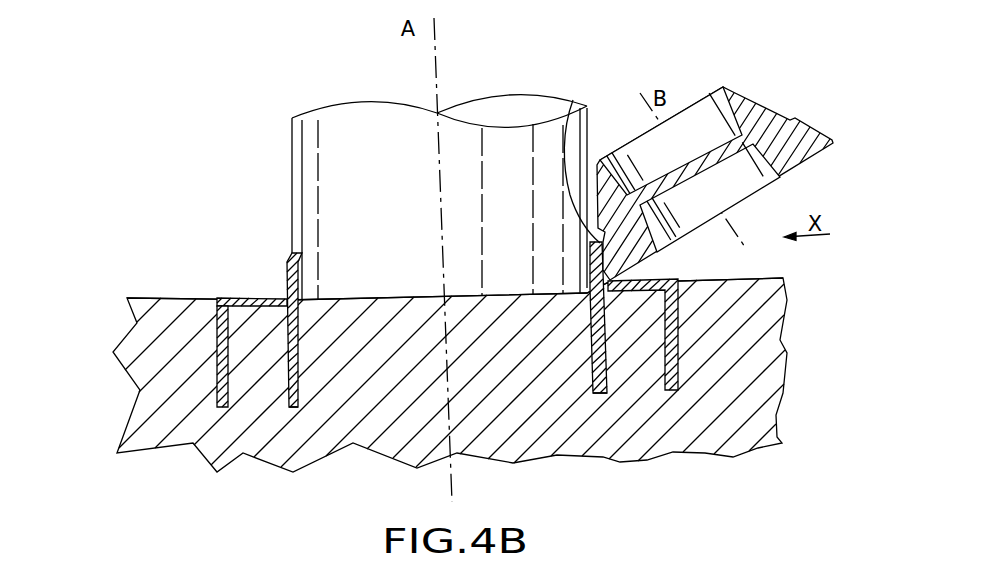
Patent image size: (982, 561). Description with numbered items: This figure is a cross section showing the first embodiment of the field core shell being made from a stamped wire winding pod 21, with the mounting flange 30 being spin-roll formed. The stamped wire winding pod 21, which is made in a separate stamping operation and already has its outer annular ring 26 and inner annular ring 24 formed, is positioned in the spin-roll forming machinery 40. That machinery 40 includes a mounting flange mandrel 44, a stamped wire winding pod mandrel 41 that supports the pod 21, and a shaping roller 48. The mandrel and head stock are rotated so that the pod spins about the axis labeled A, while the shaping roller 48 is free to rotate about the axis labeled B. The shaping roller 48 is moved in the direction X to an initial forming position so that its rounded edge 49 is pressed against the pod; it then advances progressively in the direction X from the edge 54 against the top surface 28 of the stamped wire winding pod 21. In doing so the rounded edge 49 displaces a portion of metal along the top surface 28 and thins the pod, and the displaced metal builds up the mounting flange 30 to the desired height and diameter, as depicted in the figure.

The stamped wire winding pod 21 is at (260, 297).
The inner annular ring 24 is at (297, 407).
The outer annular ring 26 is at (230, 392).
The top surface 28 is at (247, 297).
The mounting flange 30 is at (290, 255).
The spin-roll forming machinery 40 is at (122, 283).
The stamped wire winding pod mandrel 41 is at (137, 322).
The mounting flange mandrel 44 is at (497, 148).
The shaping roller 48 is at (750, 104).
The rounded edge 49 is at (573, 100).
The edge 54 is at (666, 281).